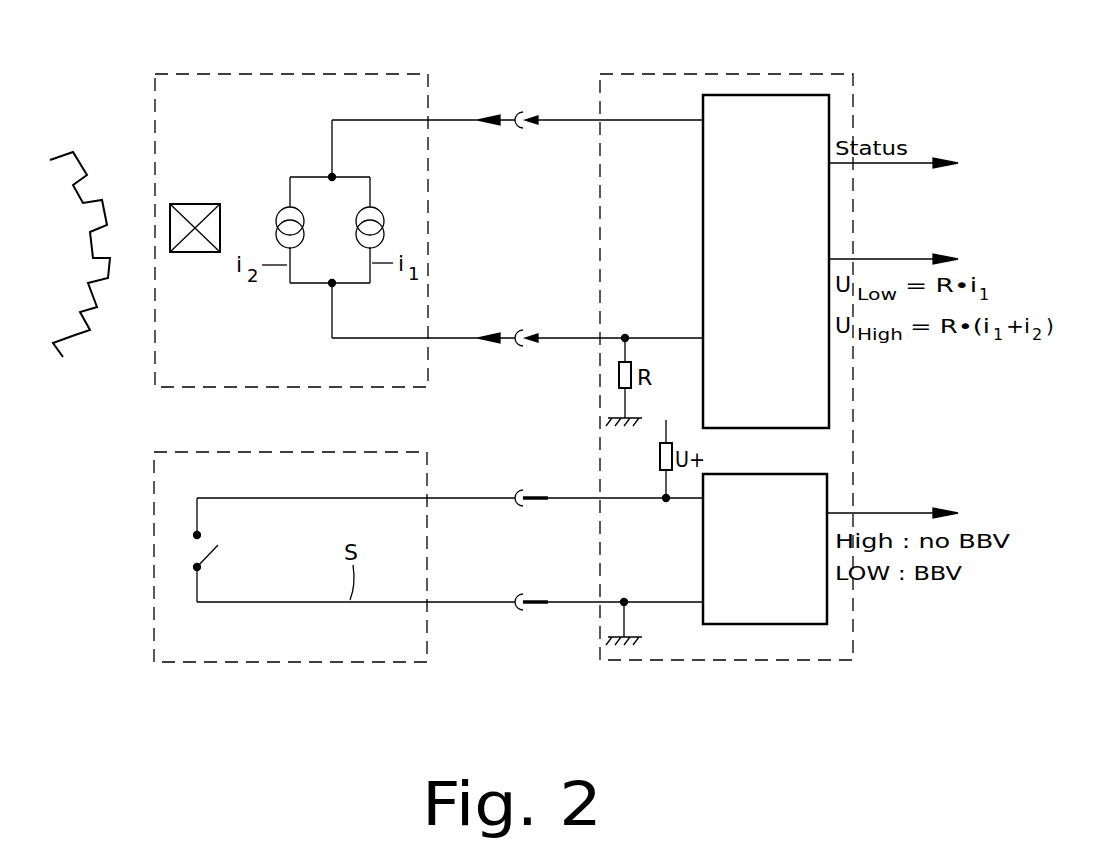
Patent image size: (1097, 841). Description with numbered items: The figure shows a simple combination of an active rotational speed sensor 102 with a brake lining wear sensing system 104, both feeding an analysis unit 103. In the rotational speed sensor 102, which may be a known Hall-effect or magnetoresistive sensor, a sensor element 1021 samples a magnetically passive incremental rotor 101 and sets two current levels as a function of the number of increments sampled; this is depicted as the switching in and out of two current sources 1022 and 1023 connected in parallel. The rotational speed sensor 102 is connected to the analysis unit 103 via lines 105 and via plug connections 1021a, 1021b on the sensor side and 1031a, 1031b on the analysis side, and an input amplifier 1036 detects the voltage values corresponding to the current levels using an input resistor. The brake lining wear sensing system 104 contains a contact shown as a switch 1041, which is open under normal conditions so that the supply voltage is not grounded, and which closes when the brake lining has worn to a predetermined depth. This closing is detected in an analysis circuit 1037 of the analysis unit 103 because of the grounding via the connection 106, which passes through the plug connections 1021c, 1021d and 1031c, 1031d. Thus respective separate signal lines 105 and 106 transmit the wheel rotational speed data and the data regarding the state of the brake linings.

The incremental rotor 101 is at (90, 323).
The rotational speed sensor 102 is at (291, 73).
The analysis unit 103 is at (713, 73).
The sensing system for brake lining wear 104 is at (340, 663).
The lines 105 is at (463, 122).
The connection 106 is at (452, 500).
The sensor element 1021 is at (199, 240).
The plug connection 1021a is at (520, 115).
The plug connection 1021b is at (520, 342).
The connector socket 1021c is at (520, 495).
The connector socket 1021d is at (520, 605).
The current source 1022 is at (287, 217).
The current source 1023 is at (377, 217).
The plug connection 1031a is at (538, 123).
The plug connection 1031b is at (538, 332).
The connector plug 1031c is at (535, 500).
The connector plug 1031d is at (535, 600).
The input amplifier 1036 is at (703, 213).
The analysis circuit 1037 is at (703, 553).
The switch 1041 is at (214, 549).